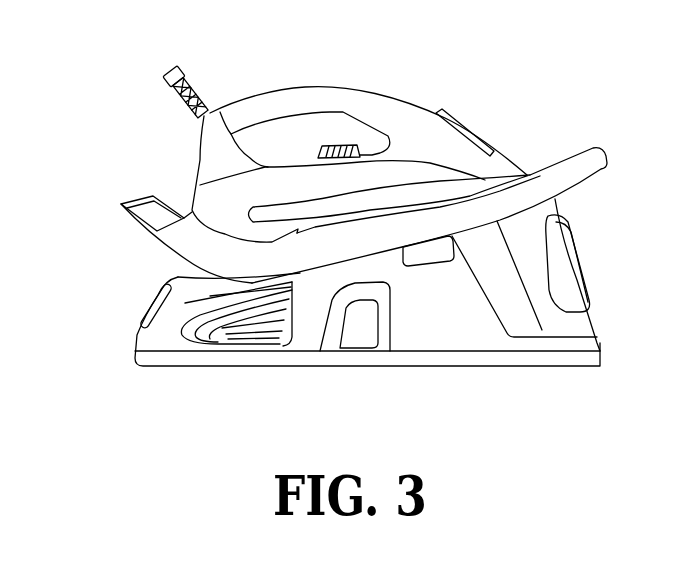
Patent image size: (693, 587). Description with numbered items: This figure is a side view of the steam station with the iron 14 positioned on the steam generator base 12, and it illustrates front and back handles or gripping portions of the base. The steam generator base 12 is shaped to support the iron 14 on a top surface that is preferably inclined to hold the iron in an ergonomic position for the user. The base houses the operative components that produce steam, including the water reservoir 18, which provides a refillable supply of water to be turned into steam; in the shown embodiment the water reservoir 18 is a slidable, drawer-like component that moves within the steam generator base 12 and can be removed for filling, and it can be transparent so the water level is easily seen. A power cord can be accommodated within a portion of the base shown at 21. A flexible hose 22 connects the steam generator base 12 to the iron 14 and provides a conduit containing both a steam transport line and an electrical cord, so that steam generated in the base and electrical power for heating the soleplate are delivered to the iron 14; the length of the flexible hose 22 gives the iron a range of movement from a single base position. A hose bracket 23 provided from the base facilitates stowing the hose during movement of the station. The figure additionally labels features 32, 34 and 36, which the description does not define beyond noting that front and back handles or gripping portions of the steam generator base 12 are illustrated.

The steam generator base 12 is at (477, 339).
The iron 14 is at (393, 110).
The water reservoir 18 is at (543, 213).
The power cord accommodating portion 21 is at (230, 326).
The flexible hose 22 is at (168, 86).
The hose bracket 23 is at (380, 339).
The handle 32 is at (586, 147).
The panel 34 is at (136, 193).
The nose portion 36 is at (197, 255).